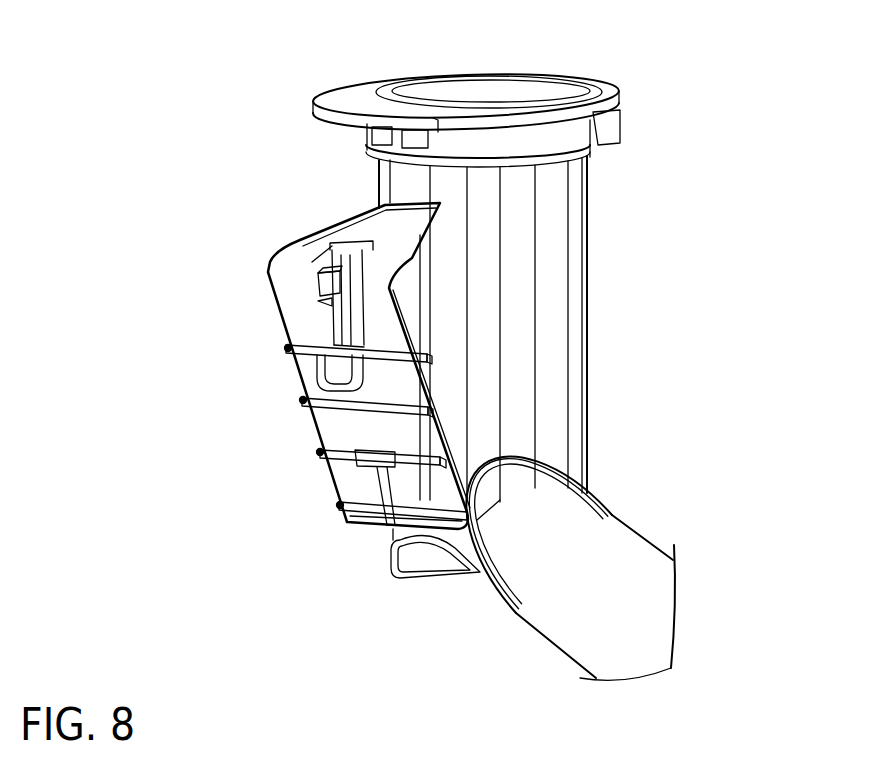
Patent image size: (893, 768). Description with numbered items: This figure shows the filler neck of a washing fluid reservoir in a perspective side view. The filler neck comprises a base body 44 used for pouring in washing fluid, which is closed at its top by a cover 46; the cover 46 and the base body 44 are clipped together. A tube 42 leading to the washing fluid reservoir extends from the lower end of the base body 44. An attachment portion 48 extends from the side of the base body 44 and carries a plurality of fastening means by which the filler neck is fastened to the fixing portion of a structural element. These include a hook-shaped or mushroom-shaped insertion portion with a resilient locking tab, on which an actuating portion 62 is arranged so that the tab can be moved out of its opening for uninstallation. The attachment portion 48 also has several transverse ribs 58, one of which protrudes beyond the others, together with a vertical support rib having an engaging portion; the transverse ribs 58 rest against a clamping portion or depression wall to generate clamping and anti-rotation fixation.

The tube 42 is at (617, 563).
The base body 44 is at (556, 380).
The cover 46 is at (560, 87).
The attachment portion 48 is at (165, 479).
The transverse rib 58 is at (288, 348).
The actuating portion 62 is at (327, 282).